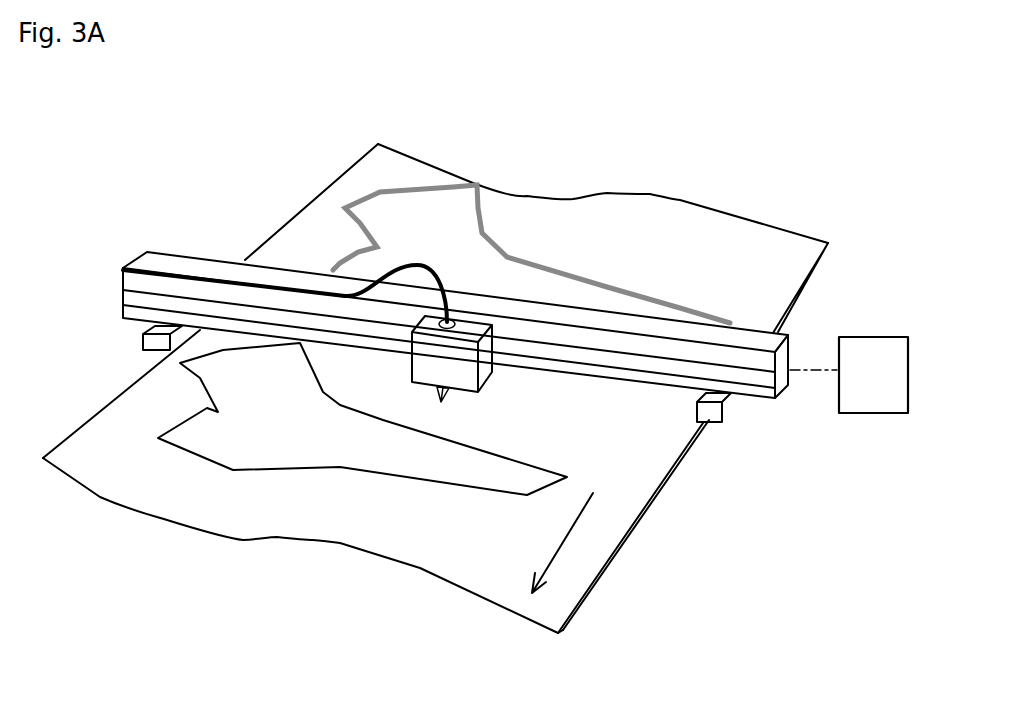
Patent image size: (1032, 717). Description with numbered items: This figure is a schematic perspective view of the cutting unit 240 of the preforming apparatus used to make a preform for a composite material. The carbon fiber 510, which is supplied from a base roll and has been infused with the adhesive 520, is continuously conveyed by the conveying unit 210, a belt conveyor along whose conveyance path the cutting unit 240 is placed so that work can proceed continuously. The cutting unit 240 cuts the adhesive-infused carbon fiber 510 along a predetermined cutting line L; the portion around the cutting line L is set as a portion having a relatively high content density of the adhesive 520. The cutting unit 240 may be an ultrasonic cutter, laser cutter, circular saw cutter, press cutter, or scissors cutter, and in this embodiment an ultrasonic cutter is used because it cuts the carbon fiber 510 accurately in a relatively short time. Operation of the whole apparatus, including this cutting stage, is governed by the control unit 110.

The control unit 110 is at (890, 352).
The conveying unit 210 is at (683, 463).
The cutting unit 240 is at (195, 273).
The carbon fiber 510 is at (747, 288).
The adhesive 520 is at (613, 285).
The cutting line L is at (492, 490).